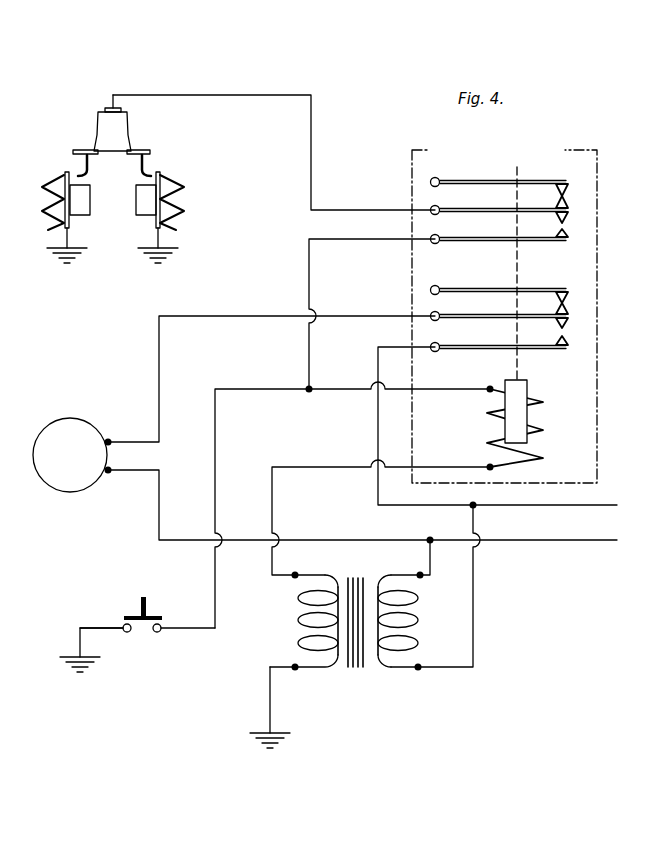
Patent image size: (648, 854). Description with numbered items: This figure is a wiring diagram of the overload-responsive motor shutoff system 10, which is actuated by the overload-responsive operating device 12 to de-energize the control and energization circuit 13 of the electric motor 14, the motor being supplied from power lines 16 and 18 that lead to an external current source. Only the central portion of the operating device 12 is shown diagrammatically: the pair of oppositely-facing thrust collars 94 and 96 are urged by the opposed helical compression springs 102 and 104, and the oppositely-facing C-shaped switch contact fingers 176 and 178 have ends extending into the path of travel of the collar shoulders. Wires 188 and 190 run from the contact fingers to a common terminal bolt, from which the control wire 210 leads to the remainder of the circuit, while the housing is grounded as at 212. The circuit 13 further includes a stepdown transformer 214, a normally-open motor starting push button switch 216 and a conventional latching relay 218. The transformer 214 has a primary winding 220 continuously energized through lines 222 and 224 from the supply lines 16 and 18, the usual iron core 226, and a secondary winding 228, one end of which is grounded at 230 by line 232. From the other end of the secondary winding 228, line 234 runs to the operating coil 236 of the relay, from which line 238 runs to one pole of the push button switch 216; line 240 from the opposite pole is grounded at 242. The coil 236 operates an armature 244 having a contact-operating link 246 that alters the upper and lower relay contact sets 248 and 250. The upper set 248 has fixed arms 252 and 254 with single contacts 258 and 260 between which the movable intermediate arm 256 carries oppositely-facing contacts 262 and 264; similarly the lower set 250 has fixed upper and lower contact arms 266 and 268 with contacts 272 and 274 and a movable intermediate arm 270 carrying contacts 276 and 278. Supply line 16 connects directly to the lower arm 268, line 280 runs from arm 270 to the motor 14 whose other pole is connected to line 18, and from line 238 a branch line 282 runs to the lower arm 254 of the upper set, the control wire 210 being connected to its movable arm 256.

The overload-responsive motor shutoff system 10 is at (176, 87).
The overload-responsive operating device 12 is at (122, 177).
The control and energization circuit 13 is at (314, 151).
The electric motor 14 is at (84, 419).
The power line 16 is at (377, 428).
The power line 18 is at (575, 541).
The thrust collar 94 is at (148, 215).
The thrust collar 96 is at (78, 215).
The helical compression spring 102 is at (186, 198).
The helical compression spring 104 is at (48, 200).
The switch contact finger 176 is at (150, 160).
The switch contact finger 178 is at (82, 160).
The wire 188 is at (128, 128).
The wire 190 is at (111, 100).
The control wire 210 is at (225, 95).
The ground 212 is at (70, 258).
The stepdown transformer 214 is at (364, 646).
The motor starting push button switch 216 is at (158, 608).
The latching relay 218 is at (590, 149).
The primary winding 220 is at (415, 632).
The line 222 is at (475, 596).
The line 224 is at (432, 567).
The iron core 226 is at (355, 670).
The secondary winding 228 is at (318, 669).
The ground 230 is at (265, 732).
The line 232 is at (274, 666).
The line 234 is at (272, 506).
The operating coil 236 is at (543, 436).
The line 238 is at (350, 388).
The line 240 is at (102, 628).
The ground 242 is at (83, 667).
The armature 244 is at (528, 391).
The contact-operating link 246 is at (518, 272).
The upper relay contact set 248 is at (586, 212).
The lower relay contact set 250 is at (574, 320).
The fixed arm 252 is at (472, 181).
The fixed arm 254 is at (471, 238).
The movable intermediate arm 256 is at (472, 209).
The contact 258 is at (563, 183).
The contact 260 is at (570, 239).
The movable contact 262 is at (568, 198).
The movable contact 264 is at (571, 225).
The fixed upper contact arm 266 is at (479, 289).
The fixed lower contact arm 268 is at (479, 346).
The movable intermediate arm 270 is at (479, 315).
The contact 272 is at (570, 296).
The contact 274 is at (571, 344).
The contact 276 is at (570, 310).
The contact 278 is at (571, 326).
The line 280 is at (278, 316).
The branch line 282 is at (308, 262).